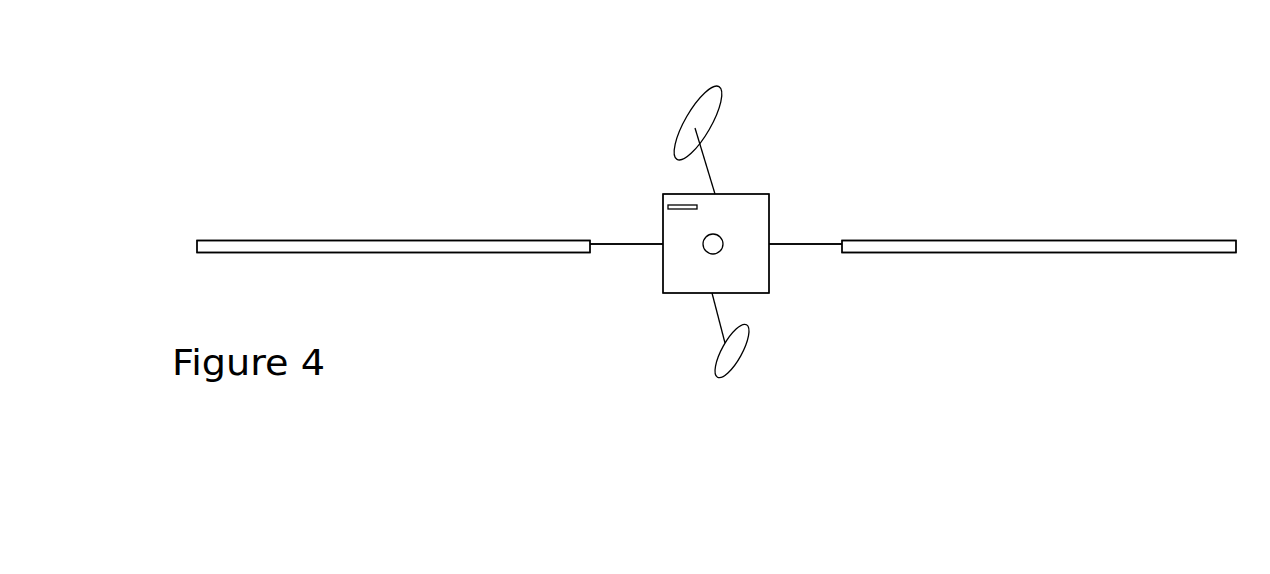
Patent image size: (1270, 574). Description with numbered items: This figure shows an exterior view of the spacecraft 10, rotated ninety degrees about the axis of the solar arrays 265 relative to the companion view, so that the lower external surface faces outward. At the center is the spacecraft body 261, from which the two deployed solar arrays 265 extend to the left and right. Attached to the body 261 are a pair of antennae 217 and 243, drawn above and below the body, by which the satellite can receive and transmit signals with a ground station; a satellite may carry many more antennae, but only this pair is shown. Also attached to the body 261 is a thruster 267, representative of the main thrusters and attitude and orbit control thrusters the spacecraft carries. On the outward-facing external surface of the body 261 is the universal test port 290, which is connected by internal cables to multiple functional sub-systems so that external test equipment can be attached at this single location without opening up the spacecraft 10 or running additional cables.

The spacecraft 10 is at (342, 142).
The spacecraft body 261 is at (765, 290).
The solar arrays 265 is at (417, 240).
The universal test port 290 is at (665, 207).
The thruster 267 is at (707, 253).
The antenna 217 is at (722, 97).
The antenna 243 is at (745, 352).